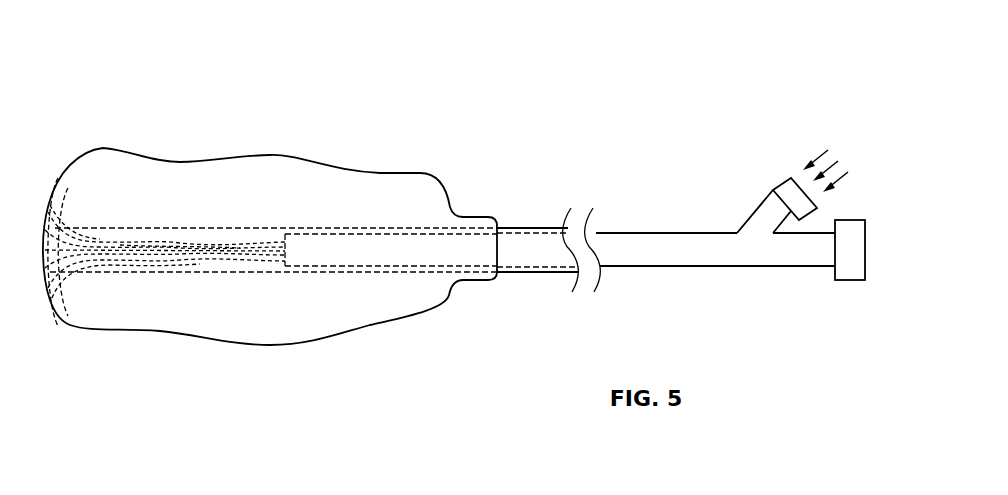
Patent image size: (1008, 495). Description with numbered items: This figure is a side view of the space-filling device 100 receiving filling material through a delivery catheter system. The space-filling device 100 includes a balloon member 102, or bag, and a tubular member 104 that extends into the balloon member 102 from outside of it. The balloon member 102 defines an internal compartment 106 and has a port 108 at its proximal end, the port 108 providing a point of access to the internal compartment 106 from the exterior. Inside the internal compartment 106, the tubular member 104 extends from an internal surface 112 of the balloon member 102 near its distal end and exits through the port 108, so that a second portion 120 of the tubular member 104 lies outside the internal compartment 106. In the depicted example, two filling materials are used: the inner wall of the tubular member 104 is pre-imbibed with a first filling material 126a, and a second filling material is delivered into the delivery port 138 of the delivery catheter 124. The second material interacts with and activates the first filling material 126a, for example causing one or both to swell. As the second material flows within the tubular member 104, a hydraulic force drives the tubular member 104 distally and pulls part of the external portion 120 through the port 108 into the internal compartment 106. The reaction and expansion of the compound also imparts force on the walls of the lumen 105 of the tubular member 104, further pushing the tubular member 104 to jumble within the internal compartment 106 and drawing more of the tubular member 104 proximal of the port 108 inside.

The space-filling device 100 is at (160, 62).
The balloon member 102 is at (103, 148).
The tubular member 104 is at (528, 227).
The lumen 105 is at (178, 261).
The internal compartment 106 is at (172, 312).
The port 108 is at (476, 206).
The internal surface 112 is at (253, 336).
The second portion of the tubular member 120 is at (495, 287).
The delivery catheter 124 is at (664, 268).
The first filling material 126a is at (82, 237).
The delivery port 138 is at (791, 290).